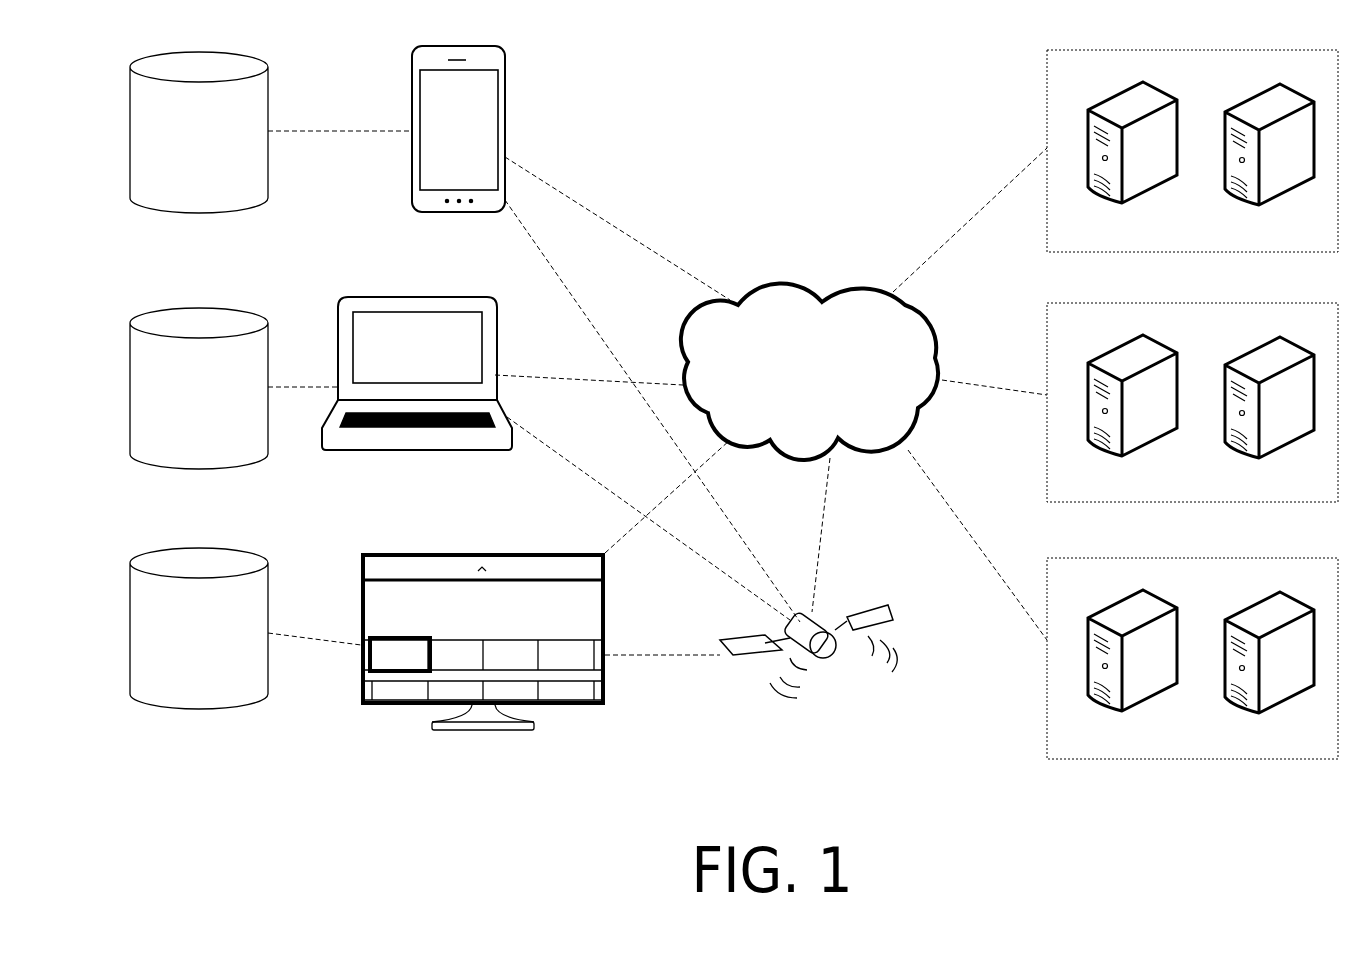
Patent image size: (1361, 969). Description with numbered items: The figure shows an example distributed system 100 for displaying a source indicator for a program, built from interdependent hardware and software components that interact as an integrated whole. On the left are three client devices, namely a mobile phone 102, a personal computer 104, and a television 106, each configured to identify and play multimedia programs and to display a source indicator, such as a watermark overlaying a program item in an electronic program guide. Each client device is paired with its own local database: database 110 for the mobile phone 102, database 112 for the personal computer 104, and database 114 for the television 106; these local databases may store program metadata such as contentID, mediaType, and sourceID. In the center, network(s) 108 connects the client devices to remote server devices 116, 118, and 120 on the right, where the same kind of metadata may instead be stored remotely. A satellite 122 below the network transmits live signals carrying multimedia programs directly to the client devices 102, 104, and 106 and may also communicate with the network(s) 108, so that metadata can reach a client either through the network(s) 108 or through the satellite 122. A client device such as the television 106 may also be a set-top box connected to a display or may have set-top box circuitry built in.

The system 100 is at (830, 95).
The mobile phone 102 is at (479, 148).
The personal computer 104 is at (479, 477).
The television 106 is at (498, 780).
The network(s) 108 is at (834, 413).
The local database 110 is at (221, 146).
The local database 112 is at (221, 400).
The local database 114 is at (221, 646).
The server device 116 is at (1216, 238).
The server device 118 is at (1216, 489).
The server device 120 is at (1216, 746).
The satellite 122 is at (844, 737).